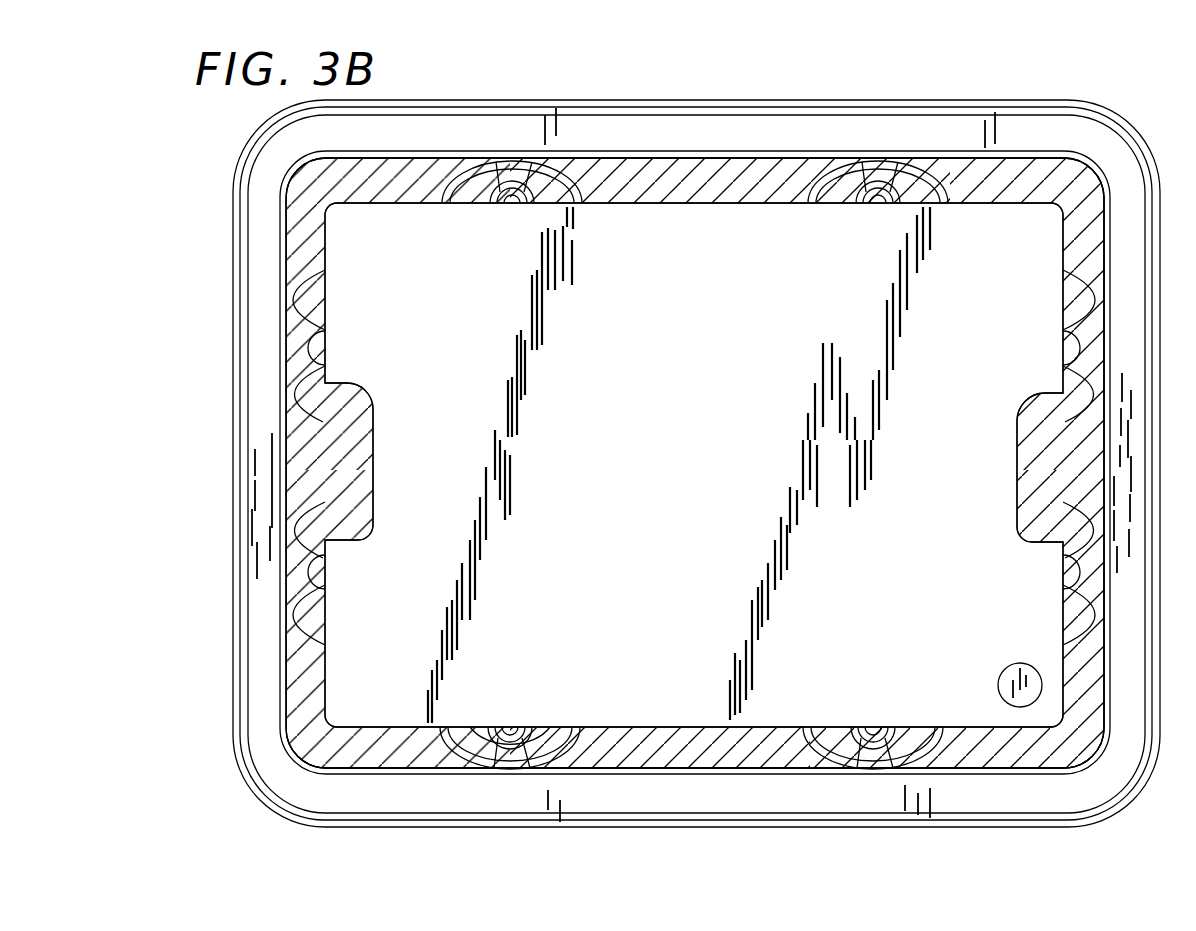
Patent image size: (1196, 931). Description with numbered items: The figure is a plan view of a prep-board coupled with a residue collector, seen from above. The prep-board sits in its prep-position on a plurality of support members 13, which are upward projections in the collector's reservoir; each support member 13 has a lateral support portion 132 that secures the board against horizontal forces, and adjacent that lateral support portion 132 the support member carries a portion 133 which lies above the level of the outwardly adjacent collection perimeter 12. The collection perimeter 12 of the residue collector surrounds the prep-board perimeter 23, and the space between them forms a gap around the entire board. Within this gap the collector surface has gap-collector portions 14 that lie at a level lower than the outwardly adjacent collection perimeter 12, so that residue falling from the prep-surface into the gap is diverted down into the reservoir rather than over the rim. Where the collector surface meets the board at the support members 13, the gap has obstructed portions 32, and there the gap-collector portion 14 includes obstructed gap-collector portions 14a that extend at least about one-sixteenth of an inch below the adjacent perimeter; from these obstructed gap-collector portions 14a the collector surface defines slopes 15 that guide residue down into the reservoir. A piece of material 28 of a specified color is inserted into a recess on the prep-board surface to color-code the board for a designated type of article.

The collection perimeter 12 is at (395, 158).
The support member 13 is at (544, 178).
The gap-collector portion 14 is at (1082, 222).
The obstructed gap-collector portion 14a is at (513, 190).
The slope 15 is at (512, 767).
The prep-board perimeter 23 is at (654, 188).
The piece of material 28 is at (1013, 663).
The obstructed portion 32 is at (486, 172).
The lateral support portion 132 is at (515, 208).
The portion 133 is at (494, 203).